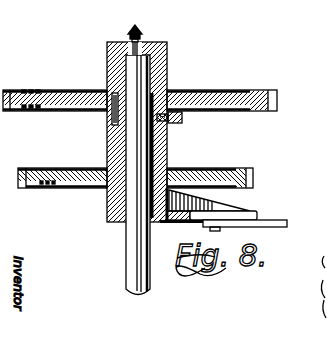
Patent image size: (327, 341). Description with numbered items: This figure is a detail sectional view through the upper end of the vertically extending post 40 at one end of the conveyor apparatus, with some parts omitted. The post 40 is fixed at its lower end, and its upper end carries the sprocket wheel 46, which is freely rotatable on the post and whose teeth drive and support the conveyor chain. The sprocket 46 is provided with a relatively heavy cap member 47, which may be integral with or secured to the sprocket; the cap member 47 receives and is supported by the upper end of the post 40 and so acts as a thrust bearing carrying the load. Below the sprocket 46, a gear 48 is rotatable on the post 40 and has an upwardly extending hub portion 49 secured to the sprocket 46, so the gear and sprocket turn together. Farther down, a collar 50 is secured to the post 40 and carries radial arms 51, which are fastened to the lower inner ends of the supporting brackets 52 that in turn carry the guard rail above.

The post 40 is at (133, 267).
The sprocket wheel 46 is at (225, 92).
The cap member 47 is at (167, 50).
The gear 48 is at (210, 168).
The hub portion 49 is at (168, 148).
The collar 50 is at (158, 216).
The radial arms 51 is at (250, 212).
The supporting brackets 52 is at (262, 219).